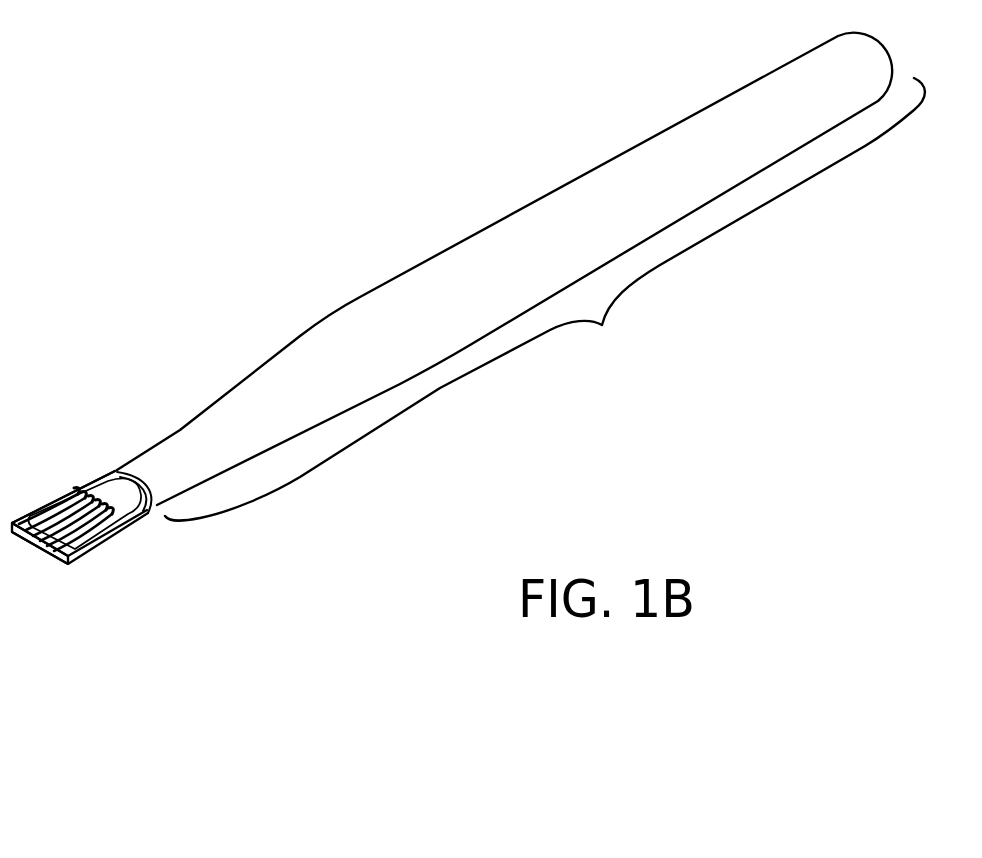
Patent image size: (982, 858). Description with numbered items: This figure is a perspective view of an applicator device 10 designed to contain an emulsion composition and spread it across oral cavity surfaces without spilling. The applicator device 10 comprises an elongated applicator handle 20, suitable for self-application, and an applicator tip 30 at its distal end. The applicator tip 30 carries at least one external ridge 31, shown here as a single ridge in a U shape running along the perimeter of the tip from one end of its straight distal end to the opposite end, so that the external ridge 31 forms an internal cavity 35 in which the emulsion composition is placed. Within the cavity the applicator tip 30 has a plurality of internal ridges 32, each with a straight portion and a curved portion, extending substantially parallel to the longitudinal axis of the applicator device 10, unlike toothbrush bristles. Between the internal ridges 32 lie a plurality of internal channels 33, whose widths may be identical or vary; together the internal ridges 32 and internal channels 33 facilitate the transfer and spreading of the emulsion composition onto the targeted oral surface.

The applicator device 10 is at (190, 297).
The applicator handle 20 is at (545, 299).
The applicator tip 30 is at (122, 552).
The external ridge 31 is at (128, 517).
The internal ridges 32 is at (22, 510).
The internal channels 33 is at (31, 535).
The internal cavity 35 is at (70, 503).